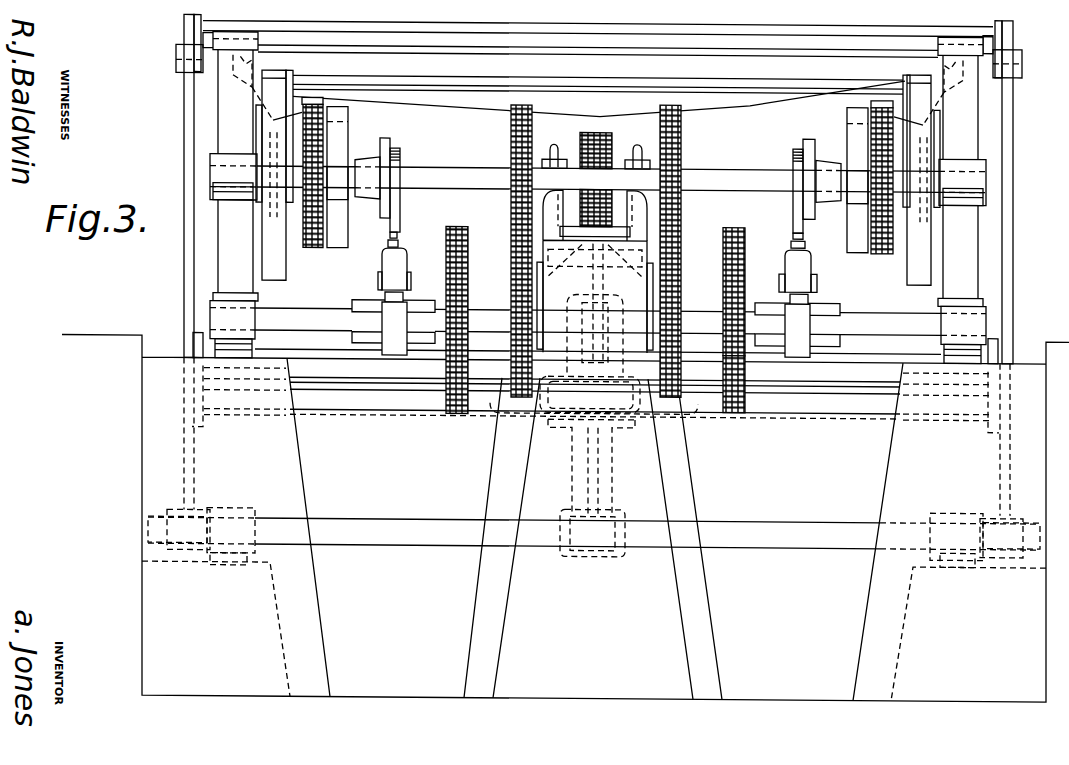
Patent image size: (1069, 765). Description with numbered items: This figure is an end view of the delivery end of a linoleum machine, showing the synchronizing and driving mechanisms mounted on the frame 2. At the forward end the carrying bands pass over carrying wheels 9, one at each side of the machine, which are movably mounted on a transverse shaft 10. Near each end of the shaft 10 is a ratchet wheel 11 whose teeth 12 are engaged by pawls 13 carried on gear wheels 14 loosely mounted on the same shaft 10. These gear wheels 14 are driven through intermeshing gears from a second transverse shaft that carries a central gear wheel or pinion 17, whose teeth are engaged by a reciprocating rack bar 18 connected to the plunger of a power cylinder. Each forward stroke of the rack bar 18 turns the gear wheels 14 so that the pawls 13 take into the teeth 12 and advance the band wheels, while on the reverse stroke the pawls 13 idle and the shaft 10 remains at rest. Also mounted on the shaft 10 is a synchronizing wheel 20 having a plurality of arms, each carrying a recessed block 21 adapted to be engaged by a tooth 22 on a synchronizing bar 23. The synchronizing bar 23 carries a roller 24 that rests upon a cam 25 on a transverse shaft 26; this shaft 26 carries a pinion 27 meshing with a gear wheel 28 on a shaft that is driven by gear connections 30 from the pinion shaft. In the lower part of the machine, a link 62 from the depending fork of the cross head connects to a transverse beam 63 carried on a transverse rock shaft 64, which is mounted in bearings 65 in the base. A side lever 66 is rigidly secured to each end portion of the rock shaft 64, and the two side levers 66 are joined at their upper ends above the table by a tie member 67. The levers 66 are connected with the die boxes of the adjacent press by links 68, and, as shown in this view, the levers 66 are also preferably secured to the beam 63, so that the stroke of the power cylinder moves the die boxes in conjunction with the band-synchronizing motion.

The frame 2 is at (598, 198).
The carrying wheel 9 is at (261, 245).
The transverse shaft 10 is at (598, 179).
The ratchet wheel 11 is at (855, 226).
The teeth 12 is at (344, 189).
The pawl 13 is at (336, 102).
The gear wheel 14 is at (316, 243).
The central gear wheel or pinion 17 is at (613, 128).
The reciprocating rack bar 18 is at (603, 229).
The synchronizing wheel 20 is at (407, 209).
The recessed block 21 is at (399, 231).
The tooth 22 is at (401, 241).
The synchronizing bar 23 is at (404, 272).
The roller 24 is at (386, 293).
The cam 25 is at (397, 342).
The transverse shaft 26 is at (338, 320).
The pinion 27 is at (746, 340).
The gear wheel 28 is at (452, 411).
The gear connections 30 is at (520, 269).
The link 62 is at (590, 395).
The transverse beam 63 is at (711, 408).
The transverse rock shaft 64 is at (594, 535).
The bearings 65 is at (237, 553).
The side lever 66 is at (183, 282).
The tie member 67 is at (536, 24).
The link 68 is at (176, 46).